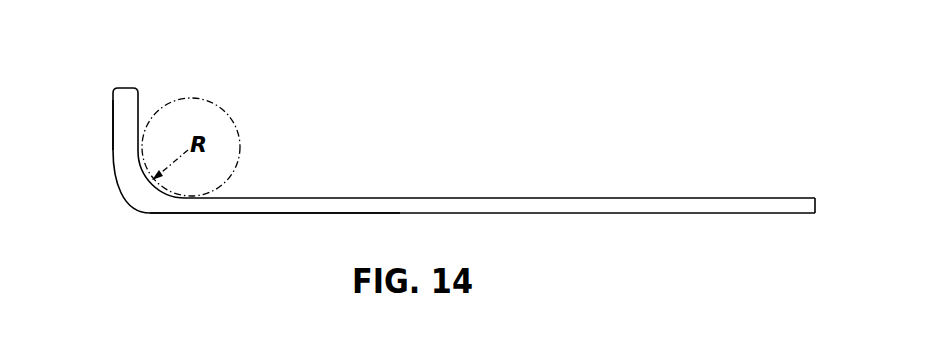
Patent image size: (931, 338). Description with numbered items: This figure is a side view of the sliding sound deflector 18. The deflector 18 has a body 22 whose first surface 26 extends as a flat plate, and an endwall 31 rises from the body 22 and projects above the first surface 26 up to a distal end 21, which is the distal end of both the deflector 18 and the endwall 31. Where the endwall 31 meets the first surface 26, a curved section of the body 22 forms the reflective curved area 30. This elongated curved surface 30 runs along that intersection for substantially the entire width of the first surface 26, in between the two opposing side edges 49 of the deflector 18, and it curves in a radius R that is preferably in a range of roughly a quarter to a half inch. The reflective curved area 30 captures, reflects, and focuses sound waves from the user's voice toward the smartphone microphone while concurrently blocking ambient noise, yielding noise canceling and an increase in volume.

The distal end 21 is at (128, 86).
The first surface 26 is at (395, 198).
The deflector 18 is at (813, 197).
The body 22 is at (622, 213).
The side edges 49 is at (282, 205).
The reflective curved area 30 is at (145, 175).
The endwall 31 is at (128, 122).